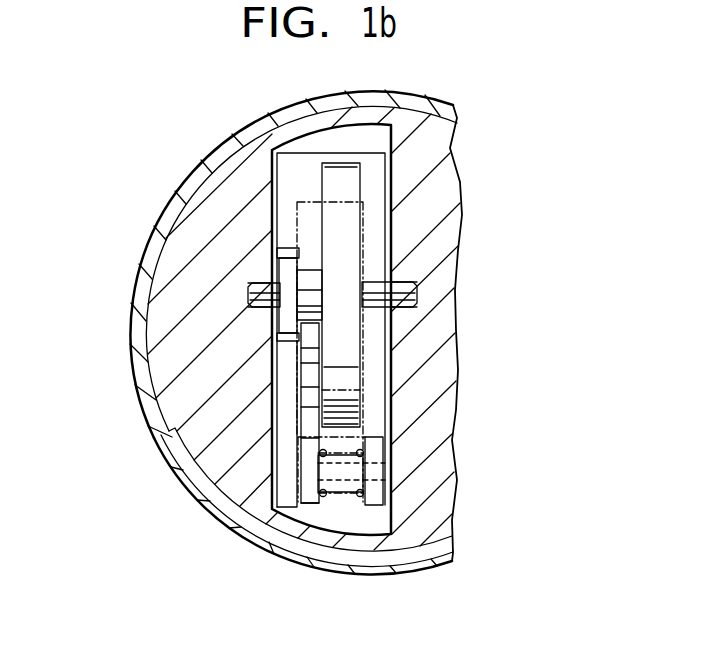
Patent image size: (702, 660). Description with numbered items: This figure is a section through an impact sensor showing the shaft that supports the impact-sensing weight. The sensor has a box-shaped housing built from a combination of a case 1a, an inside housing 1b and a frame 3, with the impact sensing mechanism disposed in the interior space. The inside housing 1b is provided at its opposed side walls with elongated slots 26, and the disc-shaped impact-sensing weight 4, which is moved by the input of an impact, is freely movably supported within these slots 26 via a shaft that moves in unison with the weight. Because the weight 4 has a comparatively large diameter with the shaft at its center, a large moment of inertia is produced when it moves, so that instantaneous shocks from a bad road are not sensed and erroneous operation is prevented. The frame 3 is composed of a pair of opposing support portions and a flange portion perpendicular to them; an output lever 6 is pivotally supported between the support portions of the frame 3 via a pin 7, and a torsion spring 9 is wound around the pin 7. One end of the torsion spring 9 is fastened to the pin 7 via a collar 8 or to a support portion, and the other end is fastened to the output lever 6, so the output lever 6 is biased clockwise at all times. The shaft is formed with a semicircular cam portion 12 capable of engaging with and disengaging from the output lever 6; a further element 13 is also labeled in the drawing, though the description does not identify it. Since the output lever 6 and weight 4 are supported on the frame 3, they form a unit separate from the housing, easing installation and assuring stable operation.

The case 1a is at (165, 460).
The inside housing 1b is at (163, 308).
The frame 3 is at (376, 178).
The impact-sensing weight 4 is at (347, 228).
The output lever 6 is at (302, 410).
The pin 7 is at (205, 516).
The collar 8 is at (333, 491).
The torsion spring 9 is at (360, 494).
The semicircular cam portion 12 is at (312, 302).
The arm 13 is at (302, 358).
The elongated slots 26 is at (253, 310).